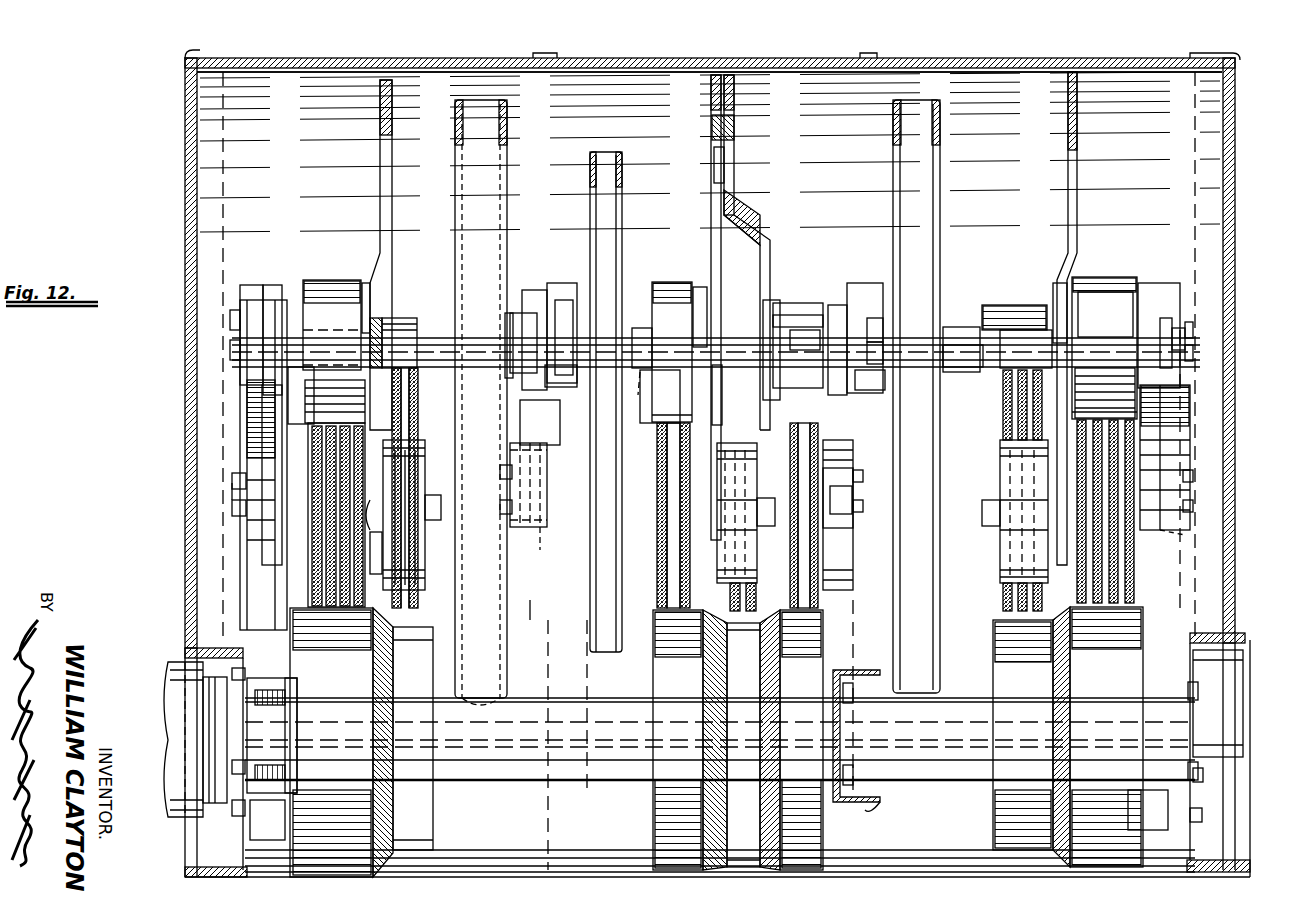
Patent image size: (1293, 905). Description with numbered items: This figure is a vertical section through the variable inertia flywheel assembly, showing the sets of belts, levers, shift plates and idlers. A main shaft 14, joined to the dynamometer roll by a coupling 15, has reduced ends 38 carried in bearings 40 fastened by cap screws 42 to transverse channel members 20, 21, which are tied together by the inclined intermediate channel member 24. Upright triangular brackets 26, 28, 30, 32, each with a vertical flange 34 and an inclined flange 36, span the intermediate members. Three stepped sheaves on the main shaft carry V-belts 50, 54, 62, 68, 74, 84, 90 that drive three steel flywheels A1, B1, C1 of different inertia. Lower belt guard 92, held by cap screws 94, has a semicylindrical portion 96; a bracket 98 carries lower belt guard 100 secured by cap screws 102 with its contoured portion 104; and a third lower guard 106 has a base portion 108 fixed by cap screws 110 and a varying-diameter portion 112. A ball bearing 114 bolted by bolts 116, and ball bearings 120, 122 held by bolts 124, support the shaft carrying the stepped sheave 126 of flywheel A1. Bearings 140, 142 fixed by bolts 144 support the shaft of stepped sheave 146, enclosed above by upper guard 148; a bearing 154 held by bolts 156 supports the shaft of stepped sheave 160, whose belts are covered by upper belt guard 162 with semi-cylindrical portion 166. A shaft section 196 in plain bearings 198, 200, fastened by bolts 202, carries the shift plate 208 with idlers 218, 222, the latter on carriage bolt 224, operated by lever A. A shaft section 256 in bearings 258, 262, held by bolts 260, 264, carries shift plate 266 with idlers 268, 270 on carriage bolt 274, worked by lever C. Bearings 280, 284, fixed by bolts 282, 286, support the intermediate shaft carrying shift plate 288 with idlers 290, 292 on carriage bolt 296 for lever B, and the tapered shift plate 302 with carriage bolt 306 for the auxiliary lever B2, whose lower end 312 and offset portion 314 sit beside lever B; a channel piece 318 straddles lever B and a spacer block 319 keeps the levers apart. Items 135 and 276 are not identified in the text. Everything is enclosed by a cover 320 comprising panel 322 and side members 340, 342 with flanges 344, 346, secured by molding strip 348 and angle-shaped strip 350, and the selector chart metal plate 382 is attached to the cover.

The main shaft 14 is at (600, 777).
The coupling 15 is at (178, 688).
The transverse channel member 20 is at (200, 868).
The transverse channel member 21 is at (1225, 860).
The intermediate channel member 24 is at (520, 818).
The bracket 26 is at (245, 420).
The bracket 28 is at (548, 612).
The bracket 30 is at (835, 305).
The bracket 32 is at (1175, 425).
The vertical flange 34 is at (265, 288).
The inclined flange 36 is at (290, 387).
The reduced ends 38 is at (225, 750).
The bearings 40 is at (285, 816).
The cap screws 42 is at (232, 810).
The V-belts 50 is at (1013, 412).
The V-belts 54 is at (1120, 575).
The V-belts 62 is at (748, 600).
The V-belts 68 is at (808, 585).
The V-belts 74 is at (672, 518).
The V-belts 84 is at (400, 400).
The V-belts 90 is at (355, 420).
The lower belt guard 92 is at (1004, 825).
The cap screws 94 is at (1195, 690).
The semicylindrical portion 96 is at (1000, 620).
The bracket 98 is at (880, 802).
The lower belt guard 100 is at (659, 821).
The cap screws 102 is at (835, 680).
The semi-cylindrical portion 104 is at (740, 860).
The lower guard 106 is at (303, 633).
The base portion 108 is at (285, 683).
The cap screws 110 is at (297, 700).
The semicircular cylindrical portion 112 is at (425, 835).
The ball bearing 114 is at (265, 548).
The bolts 116 is at (232, 505).
The ball bearing 120 is at (520, 527).
The ball bearing 122 is at (550, 540).
The bolts 124 is at (500, 508).
The stepped sheave 126 is at (428, 330).
The collar 135 is at (385, 318).
The bearing 140 is at (838, 545).
The bearing 142 is at (858, 512).
The bolts 144 is at (863, 497).
The stepped sheave 146 is at (642, 322).
The upper guard 148 is at (798, 315).
The bearing 154 is at (1195, 533).
The bolts 156 is at (1195, 477).
The stepped sheave 160 is at (966, 327).
The upper belt guard 162 is at (1025, 305).
The semi-cylindrical portion 166 is at (1125, 300).
The shaft section 196 is at (480, 350).
The plain bearing 198 is at (245, 288).
The plain bearing 200 is at (533, 290).
The bolts 202 is at (240, 322).
The shift plate 208 is at (366, 283).
The idler 218 is at (332, 280).
The idler 222 is at (415, 575).
The carriage bolt 224 is at (430, 495).
The shaft section 256 is at (965, 362).
The bearing 258 is at (870, 318).
The bolts 260 is at (872, 342).
The bearing 262 is at (1166, 318).
The bolts 264 is at (1190, 335).
The shift plate 266 is at (1058, 283).
The idler 268 is at (1095, 280).
The idler 270 is at (1002, 552).
The carriage bolt 274 is at (982, 512).
The pin 276 is at (638, 380).
The bearing 280 is at (552, 283).
The bolts 282 is at (563, 300).
The bearing 284 is at (830, 295).
The bolts 286 is at (820, 300).
The shift plate 288 is at (697, 287).
The idler 290 is at (660, 290).
The idler 292 is at (705, 612).
The carriage bolt 296 is at (665, 497).
The shift plate 302 is at (765, 312).
The carriage bolt 306 is at (855, 487).
The lower end 312 is at (753, 440).
The offset portion 314 is at (742, 205).
The channel piece 318 is at (712, 123).
The spacer block 319 is at (714, 180).
The cover 320 is at (958, 55).
The panel 322 is at (330, 60).
The side member 340 is at (185, 118).
The side member 342 is at (1228, 123).
The flange 344 is at (195, 648).
The flange 346 is at (1225, 633).
The molding strip 348 is at (200, 58).
The angle-shaped strip 350 is at (1222, 58).
The metal plate 382 is at (670, 58).
The lever A is at (380, 90).
The flywheel A1 is at (458, 120).
The lever B is at (711, 92).
The flywheel B1 is at (592, 165).
The auxiliary lever B2 is at (734, 88).
The lever C is at (1077, 98).
The flywheel C1 is at (900, 125).